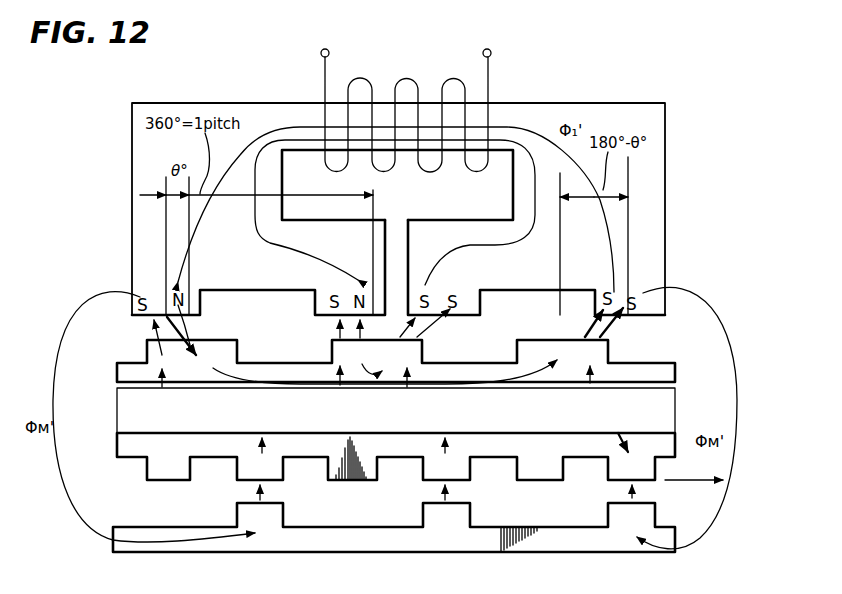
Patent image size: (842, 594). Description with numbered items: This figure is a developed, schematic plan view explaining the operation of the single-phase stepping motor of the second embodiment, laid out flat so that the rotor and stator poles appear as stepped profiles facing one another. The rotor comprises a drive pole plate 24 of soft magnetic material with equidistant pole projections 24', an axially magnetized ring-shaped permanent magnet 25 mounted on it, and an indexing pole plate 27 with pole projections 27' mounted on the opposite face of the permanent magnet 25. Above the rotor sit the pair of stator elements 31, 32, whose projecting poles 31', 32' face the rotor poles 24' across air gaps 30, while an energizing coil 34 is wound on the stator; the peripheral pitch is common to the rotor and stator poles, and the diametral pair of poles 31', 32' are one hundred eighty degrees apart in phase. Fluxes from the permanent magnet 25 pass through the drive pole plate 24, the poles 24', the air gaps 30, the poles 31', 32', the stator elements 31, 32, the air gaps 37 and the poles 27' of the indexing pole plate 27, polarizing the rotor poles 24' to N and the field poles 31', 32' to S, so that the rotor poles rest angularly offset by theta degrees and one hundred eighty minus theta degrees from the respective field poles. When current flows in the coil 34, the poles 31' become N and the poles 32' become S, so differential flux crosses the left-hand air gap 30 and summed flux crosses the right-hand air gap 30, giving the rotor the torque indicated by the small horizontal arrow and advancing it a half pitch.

The drive pole plate 24 is at (376, 368).
The pole projections 24' is at (279, 350).
The permanent magnet 25 is at (125, 413).
The indexing pole plate 27 is at (374, 459).
The pole projections 27' is at (168, 490).
The air gap 30 is at (150, 330).
The stator element 31 is at (258, 275).
The projecting poles 31' is at (325, 315).
The stator element 32 is at (536, 277).
The projecting poles 32' is at (453, 330).
The energizing coil 34 is at (409, 90).
The air gap 37 is at (643, 493).